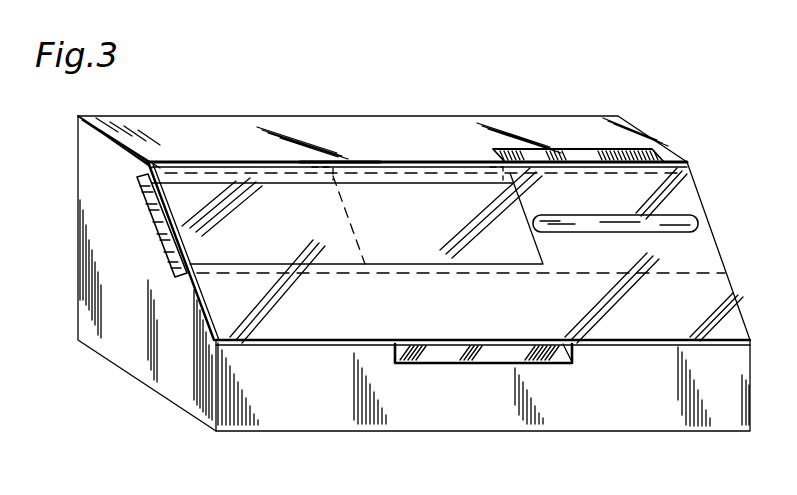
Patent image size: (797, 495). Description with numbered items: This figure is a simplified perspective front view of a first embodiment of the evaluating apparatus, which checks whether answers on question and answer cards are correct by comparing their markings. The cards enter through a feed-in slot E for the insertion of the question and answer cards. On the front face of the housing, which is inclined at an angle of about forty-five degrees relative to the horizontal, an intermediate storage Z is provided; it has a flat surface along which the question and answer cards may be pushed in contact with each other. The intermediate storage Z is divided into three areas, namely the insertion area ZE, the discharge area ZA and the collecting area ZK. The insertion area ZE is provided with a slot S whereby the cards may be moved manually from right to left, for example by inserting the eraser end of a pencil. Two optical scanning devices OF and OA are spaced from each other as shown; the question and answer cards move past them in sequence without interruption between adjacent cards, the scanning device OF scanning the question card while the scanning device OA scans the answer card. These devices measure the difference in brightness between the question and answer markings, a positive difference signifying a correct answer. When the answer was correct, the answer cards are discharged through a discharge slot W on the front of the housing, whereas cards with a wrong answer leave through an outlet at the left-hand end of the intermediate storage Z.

The intermediate storage Z is at (180, 173).
The collecting area ZK is at (238, 202).
The scanning device OF is at (335, 157).
The discharge area ZA is at (425, 200).
The scanning device OA is at (503, 174).
The feed-in slot E is at (597, 155).
The insertion area ZE is at (627, 188).
The slot S is at (660, 223).
The discharge slot W is at (450, 353).